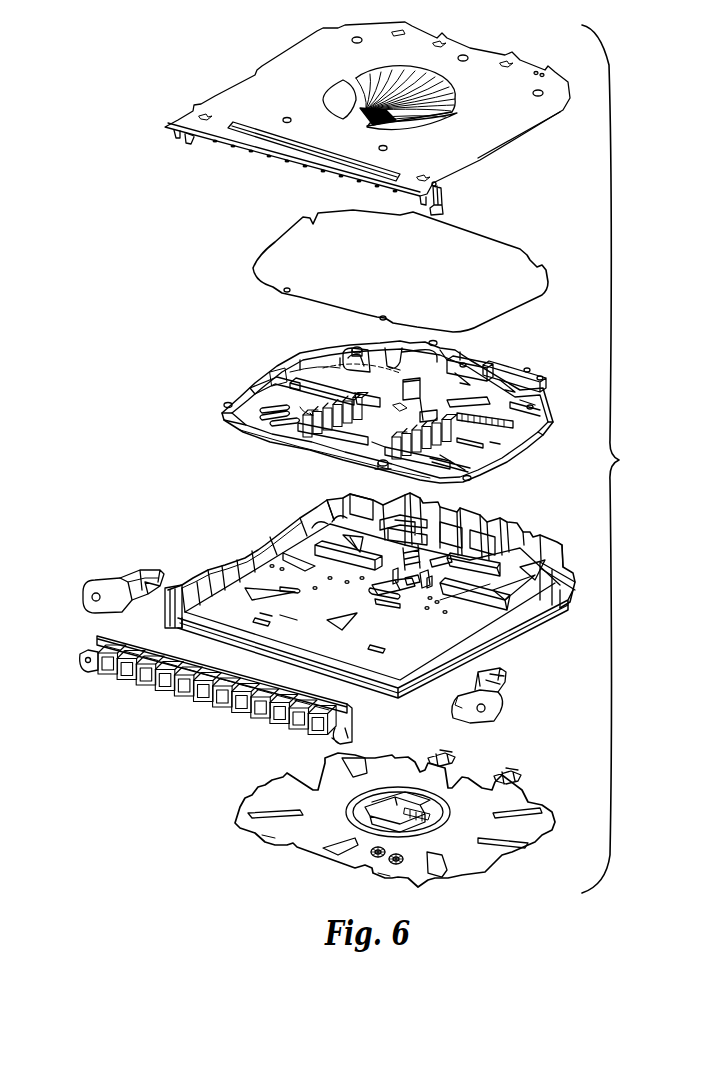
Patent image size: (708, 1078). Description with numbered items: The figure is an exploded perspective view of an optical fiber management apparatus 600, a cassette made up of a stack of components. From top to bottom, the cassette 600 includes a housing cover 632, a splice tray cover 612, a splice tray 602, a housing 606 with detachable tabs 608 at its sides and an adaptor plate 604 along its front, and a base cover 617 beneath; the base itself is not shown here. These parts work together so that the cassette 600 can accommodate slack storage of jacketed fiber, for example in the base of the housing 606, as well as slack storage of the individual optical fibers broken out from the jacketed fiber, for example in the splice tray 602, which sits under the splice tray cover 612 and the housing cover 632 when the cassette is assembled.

The optical fiber management apparatus 600 is at (616, 459).
The housing cover 632 is at (275, 64).
The splice tray cover 612 is at (275, 257).
The splice tray 602 is at (276, 372).
The housing 606 is at (276, 528).
The detachable tabs 608 is at (87, 582).
The adaptor plate 604 is at (165, 695).
The base cover 617 is at (243, 797).